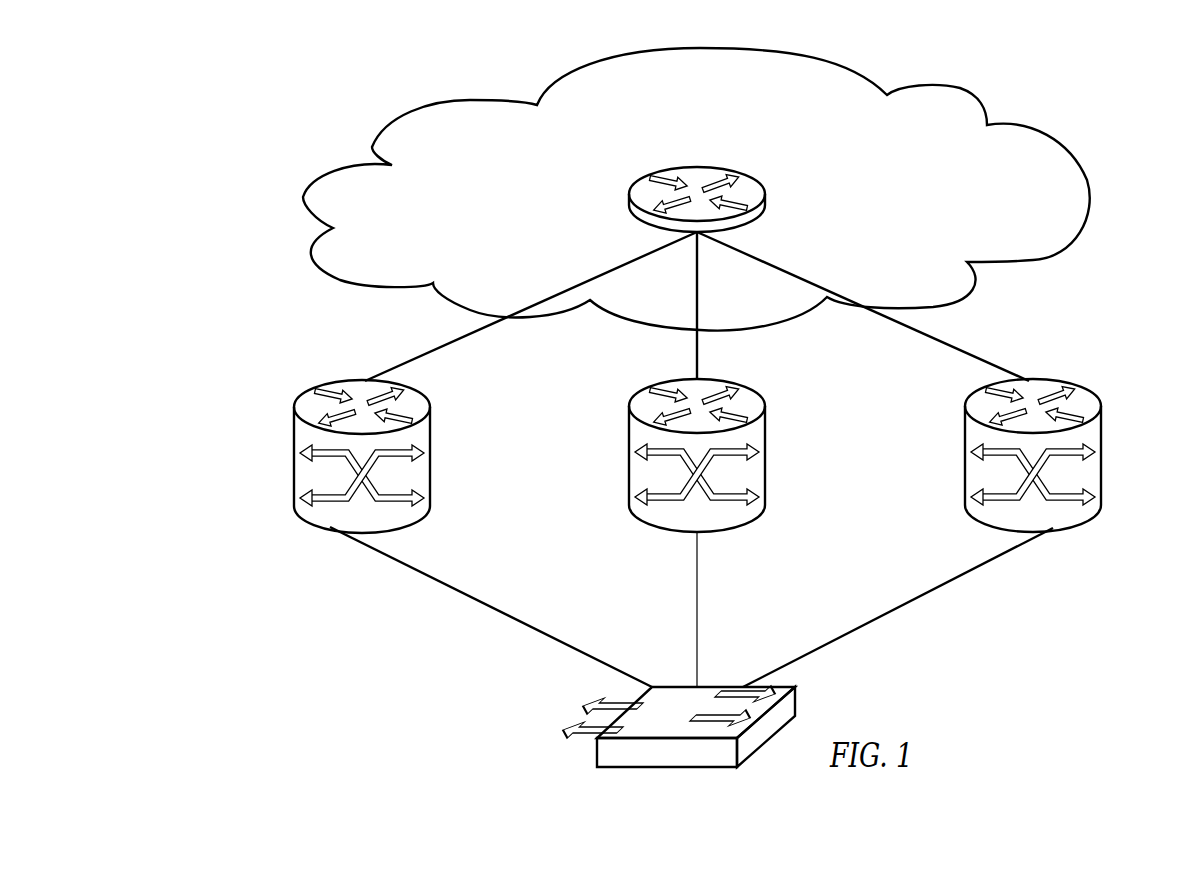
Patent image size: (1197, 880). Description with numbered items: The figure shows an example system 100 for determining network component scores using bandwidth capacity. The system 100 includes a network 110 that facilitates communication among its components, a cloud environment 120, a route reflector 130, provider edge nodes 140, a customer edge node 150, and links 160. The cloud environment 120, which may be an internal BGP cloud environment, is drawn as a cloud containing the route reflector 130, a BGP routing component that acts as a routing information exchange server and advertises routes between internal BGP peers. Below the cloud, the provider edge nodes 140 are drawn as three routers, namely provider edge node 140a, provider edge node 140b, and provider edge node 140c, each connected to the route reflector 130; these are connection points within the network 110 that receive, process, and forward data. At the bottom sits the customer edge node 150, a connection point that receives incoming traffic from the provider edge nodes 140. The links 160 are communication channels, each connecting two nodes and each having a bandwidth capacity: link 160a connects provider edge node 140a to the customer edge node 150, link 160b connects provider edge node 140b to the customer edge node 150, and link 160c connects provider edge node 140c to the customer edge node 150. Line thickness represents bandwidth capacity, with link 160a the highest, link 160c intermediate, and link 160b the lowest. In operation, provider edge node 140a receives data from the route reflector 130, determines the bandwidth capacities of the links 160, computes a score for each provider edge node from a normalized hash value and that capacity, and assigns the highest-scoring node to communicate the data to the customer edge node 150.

The system 100 is at (1047, 80).
The network 110 is at (345, 314).
The cloud environment 120 is at (696, 189).
The route reflector 130 is at (765, 191).
The provider edge nodes 140 is at (1005, 533).
The provider edge node 140a is at (430, 426).
The provider edge node 140b is at (765, 420).
The provider edge node 140c is at (965, 478).
The customer edge node 150 is at (635, 703).
The links 160 is at (788, 663).
The link 160a is at (487, 606).
The link 160b is at (697, 547).
The link 160c is at (915, 598).